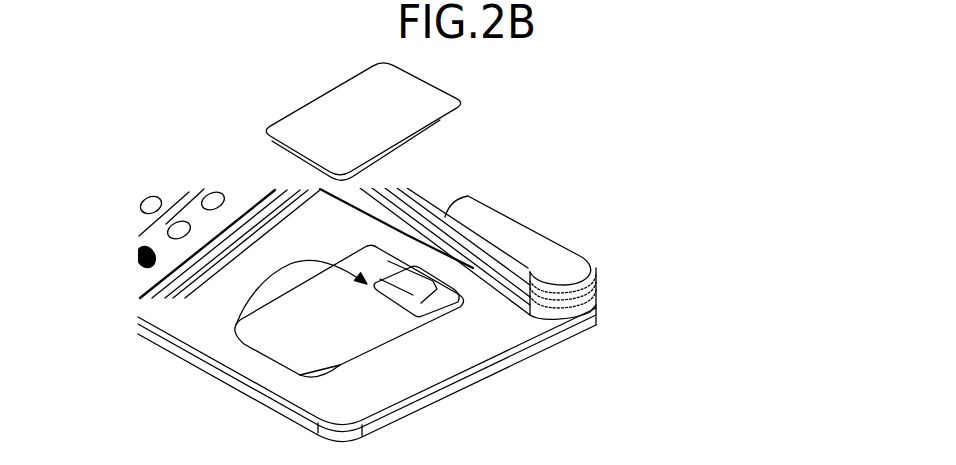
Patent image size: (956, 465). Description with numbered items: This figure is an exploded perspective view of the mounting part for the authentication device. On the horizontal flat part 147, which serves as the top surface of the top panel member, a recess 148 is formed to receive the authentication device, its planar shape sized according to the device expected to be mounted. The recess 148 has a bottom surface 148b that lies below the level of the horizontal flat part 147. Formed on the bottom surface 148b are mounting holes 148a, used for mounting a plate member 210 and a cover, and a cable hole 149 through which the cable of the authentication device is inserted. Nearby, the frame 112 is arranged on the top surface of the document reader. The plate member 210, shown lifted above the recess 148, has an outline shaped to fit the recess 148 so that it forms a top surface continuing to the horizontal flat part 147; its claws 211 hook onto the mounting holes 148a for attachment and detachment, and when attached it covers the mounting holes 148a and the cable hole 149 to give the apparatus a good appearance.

The plate member 210 is at (402, 122).
The claws 211 is at (302, 166).
The cable hole 149 is at (416, 285).
The frame 112 is at (550, 249).
The recess 148 is at (368, 246).
The mounting holes 148a is at (284, 356).
The bottom surface 148b is at (363, 325).
The horizontal flat part 147 is at (467, 334).